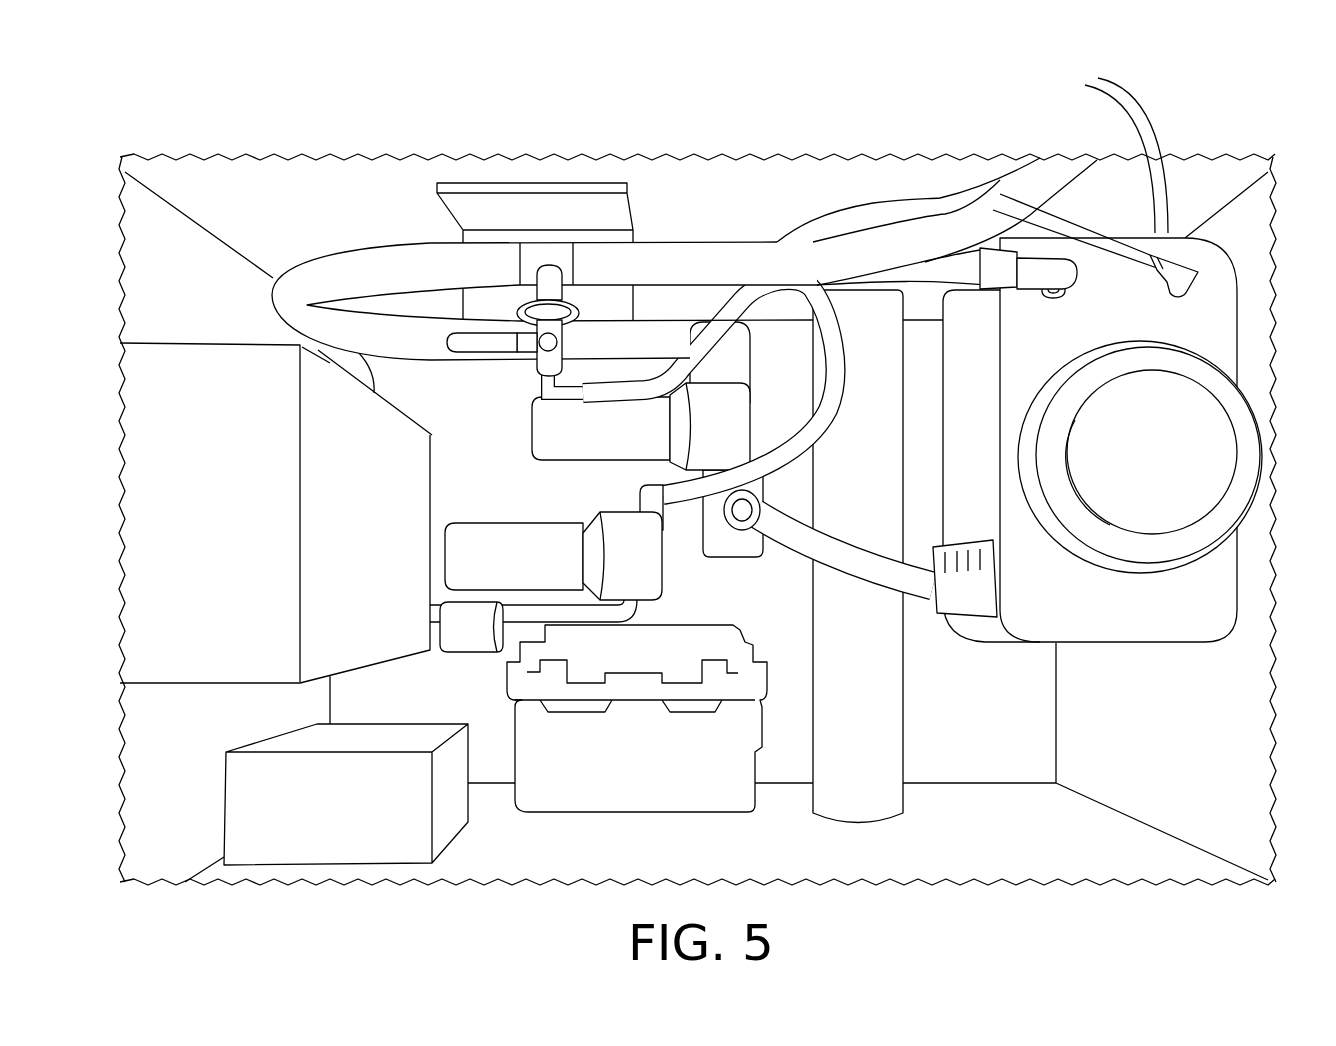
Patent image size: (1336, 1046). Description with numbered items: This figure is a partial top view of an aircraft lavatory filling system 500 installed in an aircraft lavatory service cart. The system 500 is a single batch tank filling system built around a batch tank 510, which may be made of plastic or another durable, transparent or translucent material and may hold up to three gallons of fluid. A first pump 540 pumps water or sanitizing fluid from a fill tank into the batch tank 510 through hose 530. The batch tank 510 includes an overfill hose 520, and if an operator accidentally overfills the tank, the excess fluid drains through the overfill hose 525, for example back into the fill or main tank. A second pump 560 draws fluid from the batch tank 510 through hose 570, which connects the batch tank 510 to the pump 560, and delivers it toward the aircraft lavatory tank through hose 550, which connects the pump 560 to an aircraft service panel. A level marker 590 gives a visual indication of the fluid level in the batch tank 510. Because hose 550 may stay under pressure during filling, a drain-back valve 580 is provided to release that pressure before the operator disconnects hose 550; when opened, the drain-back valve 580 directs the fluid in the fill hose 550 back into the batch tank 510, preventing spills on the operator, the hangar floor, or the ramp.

The aircraft lavatory filling system 500 is at (171, 119).
The batch tank 510 is at (1205, 314).
The overfill hose 520 is at (1130, 262).
The overfill hose 525 is at (1155, 112).
The hose 530 is at (975, 292).
The first pump 540 is at (465, 552).
The hose 550 is at (343, 262).
The second pump 560 is at (545, 433).
The hose 570 is at (860, 575).
The drain-back valve 580 is at (490, 350).
The level marker 590 is at (975, 605).